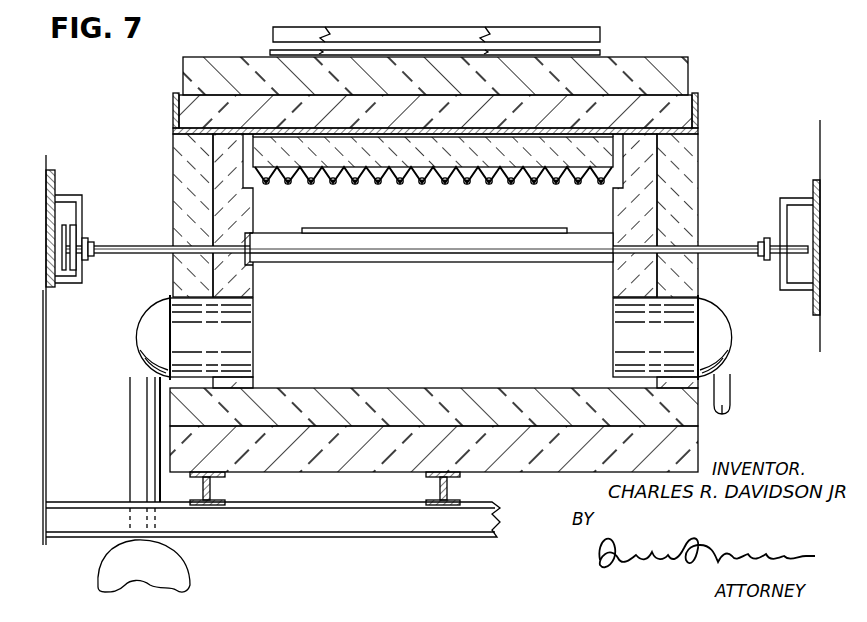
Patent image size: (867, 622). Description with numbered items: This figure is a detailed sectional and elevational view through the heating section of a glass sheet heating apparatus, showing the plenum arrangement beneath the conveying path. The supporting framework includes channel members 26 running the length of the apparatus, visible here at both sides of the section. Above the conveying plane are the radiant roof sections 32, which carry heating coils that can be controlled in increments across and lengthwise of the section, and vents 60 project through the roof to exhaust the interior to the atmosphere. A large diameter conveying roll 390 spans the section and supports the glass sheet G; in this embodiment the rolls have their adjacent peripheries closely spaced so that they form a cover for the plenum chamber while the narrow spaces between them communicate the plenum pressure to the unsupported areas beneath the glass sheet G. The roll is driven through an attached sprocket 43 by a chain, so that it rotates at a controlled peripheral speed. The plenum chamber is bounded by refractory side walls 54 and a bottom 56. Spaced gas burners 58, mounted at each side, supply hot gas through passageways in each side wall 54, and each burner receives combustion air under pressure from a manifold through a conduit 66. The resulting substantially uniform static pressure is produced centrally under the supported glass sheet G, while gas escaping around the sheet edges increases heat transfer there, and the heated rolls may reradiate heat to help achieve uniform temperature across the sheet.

The vents 60 is at (600, 48).
The channel members 26 is at (82, 203).
The sprockets 43 is at (66, 272).
The gas burners 58 is at (136, 307).
The side walls 54 is at (255, 278).
The radiant roof sections 32 is at (384, 192).
The glass sheet G is at (449, 223).
The conveying rolls 390 is at (432, 263).
The bottom 56 is at (497, 388).
The conduits 66 is at (130, 426).